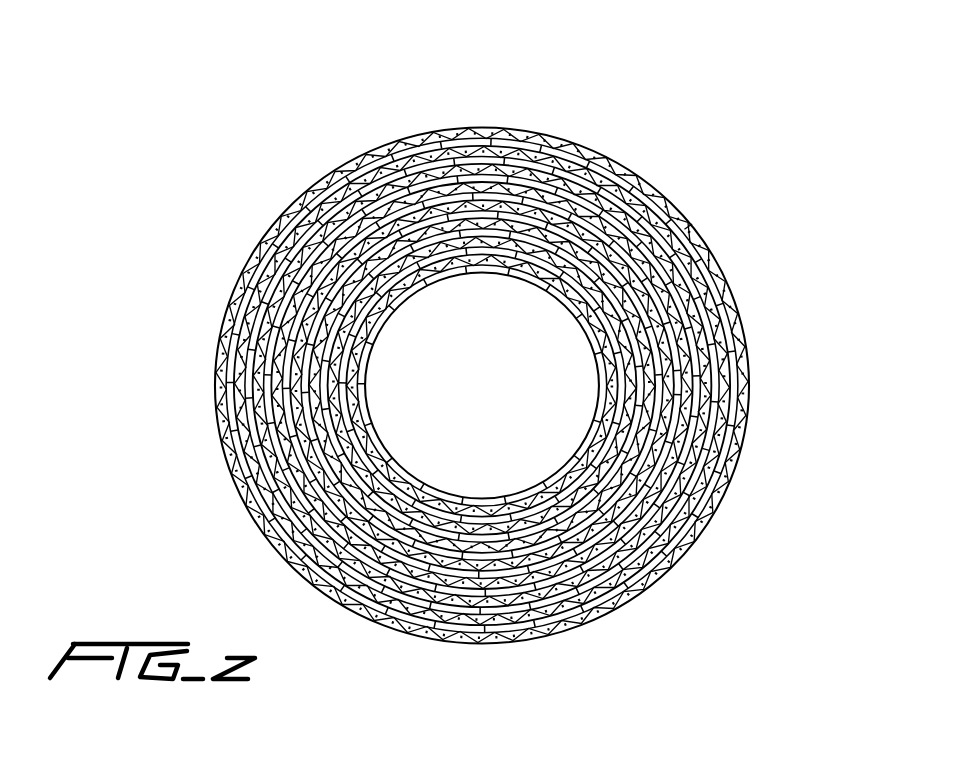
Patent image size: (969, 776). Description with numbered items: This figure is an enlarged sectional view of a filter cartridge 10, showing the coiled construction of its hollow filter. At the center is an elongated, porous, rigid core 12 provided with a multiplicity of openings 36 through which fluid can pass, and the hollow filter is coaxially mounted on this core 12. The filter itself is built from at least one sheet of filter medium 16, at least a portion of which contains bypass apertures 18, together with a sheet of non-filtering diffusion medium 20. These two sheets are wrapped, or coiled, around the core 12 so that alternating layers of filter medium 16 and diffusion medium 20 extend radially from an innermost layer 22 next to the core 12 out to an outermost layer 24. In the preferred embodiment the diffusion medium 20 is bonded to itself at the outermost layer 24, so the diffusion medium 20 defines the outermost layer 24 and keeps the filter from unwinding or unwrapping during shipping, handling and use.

The filter cartridge 10 is at (722, 160).
The core 12 is at (432, 290).
The filter medium 16 is at (307, 198).
The bypass apertures 18 is at (697, 530).
The diffusion medium 20 is at (511, 122).
The innermost layer 22 is at (600, 352).
The outermost layer 24 is at (746, 340).
The openings 36 is at (597, 397).